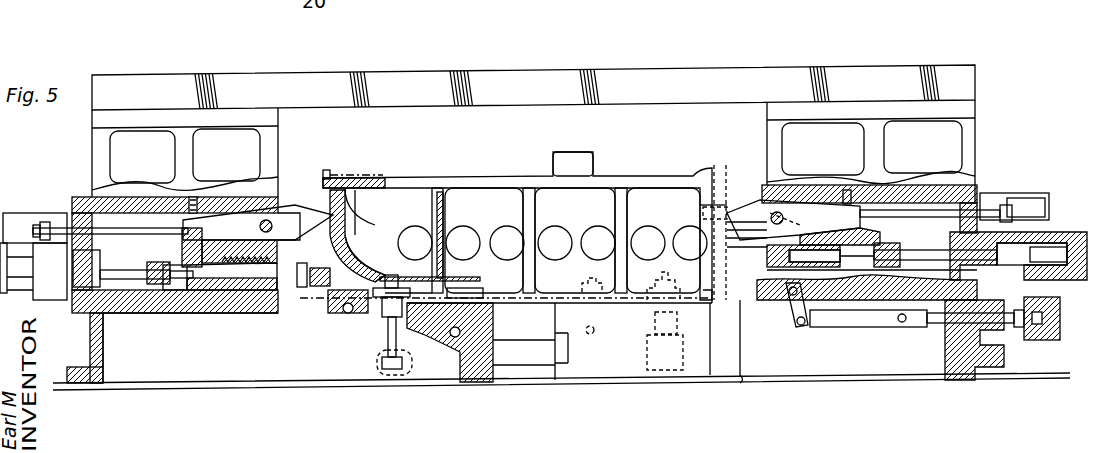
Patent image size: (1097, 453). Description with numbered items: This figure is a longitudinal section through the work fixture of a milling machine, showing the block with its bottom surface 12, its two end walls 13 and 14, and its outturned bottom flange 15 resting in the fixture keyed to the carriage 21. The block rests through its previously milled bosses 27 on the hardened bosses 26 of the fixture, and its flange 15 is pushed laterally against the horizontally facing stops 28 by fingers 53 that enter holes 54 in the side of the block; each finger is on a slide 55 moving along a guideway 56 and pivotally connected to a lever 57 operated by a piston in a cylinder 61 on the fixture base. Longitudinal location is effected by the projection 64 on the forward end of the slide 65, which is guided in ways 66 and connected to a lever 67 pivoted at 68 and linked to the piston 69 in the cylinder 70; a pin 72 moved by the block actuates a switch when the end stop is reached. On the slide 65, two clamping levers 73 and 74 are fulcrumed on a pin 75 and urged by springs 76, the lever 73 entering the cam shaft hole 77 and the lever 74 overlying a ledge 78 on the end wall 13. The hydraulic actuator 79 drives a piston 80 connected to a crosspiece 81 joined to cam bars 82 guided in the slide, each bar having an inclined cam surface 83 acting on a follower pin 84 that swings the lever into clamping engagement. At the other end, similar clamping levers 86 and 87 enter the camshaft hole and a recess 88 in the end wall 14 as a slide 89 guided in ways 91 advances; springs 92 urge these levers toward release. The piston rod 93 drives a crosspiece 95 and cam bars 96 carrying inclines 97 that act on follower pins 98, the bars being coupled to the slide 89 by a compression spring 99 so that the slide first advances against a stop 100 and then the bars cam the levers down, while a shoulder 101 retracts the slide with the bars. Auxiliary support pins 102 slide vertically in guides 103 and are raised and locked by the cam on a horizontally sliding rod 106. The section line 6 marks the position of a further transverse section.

The section line 6- 6 is at (727, 47).
The bottom surface 12 is at (470, 176).
The end wall 13 is at (722, 166).
The end wall 14 is at (324, 176).
The outturned peripheral bottom flange 15 is at (507, 176).
The carriage 21 is at (135, 400).
The hardened bosses 26 is at (332, 313).
The milled bosses 27 is at (378, 262).
The horizontally facing stops 28 is at (710, 330).
The fingers 53 is at (392, 276).
The holes 54 is at (412, 277).
The slides 55 is at (451, 293).
The guideways 56 is at (450, 342).
The levers 57 is at (388, 345).
The cylinder 61 is at (382, 363).
The projection 64 is at (727, 243).
The slide 65 is at (767, 258).
The ways 66 is at (767, 281).
The lever 67 is at (800, 326).
The pivot 68 is at (790, 305).
The piston 69 is at (1014, 327).
The cylinder 70 is at (1040, 340).
The pin 72 is at (317, 278).
The clamping lever 73 is at (705, 205).
The clamping lever 74 is at (703, 214).
The pin 75 is at (779, 213).
The spring 76 is at (846, 190).
The cam shaft hole 77 is at (346, 194).
The ledge 78 is at (727, 226).
The hydraulic actuator 79 is at (1062, 232).
The piston 80 is at (1022, 270).
The crosspiece 81 is at (886, 247).
The cam bars 82 is at (870, 266).
The inclined cam surface 83 is at (840, 239).
The follower pin 84 is at (860, 226).
The clamping lever 86 is at (386, 242).
The clamping lever 87 is at (346, 204).
The recess 88 is at (376, 226).
The slide 89 is at (298, 240).
The ways 91 is at (174, 287).
The springs 92 is at (191, 197).
The piston rod 93 is at (125, 236).
The crosspiece 95 is at (150, 279).
The cam bars 96 is at (232, 293).
The inclines 97 is at (258, 229).
The follower pins 98 is at (182, 245).
The compression spring 99 is at (232, 286).
The stop 100 is at (266, 313).
The shoulder 101 is at (239, 247).
The pin 102 is at (472, 278).
The guide 103 is at (482, 281).
The rod 106 is at (421, 359).